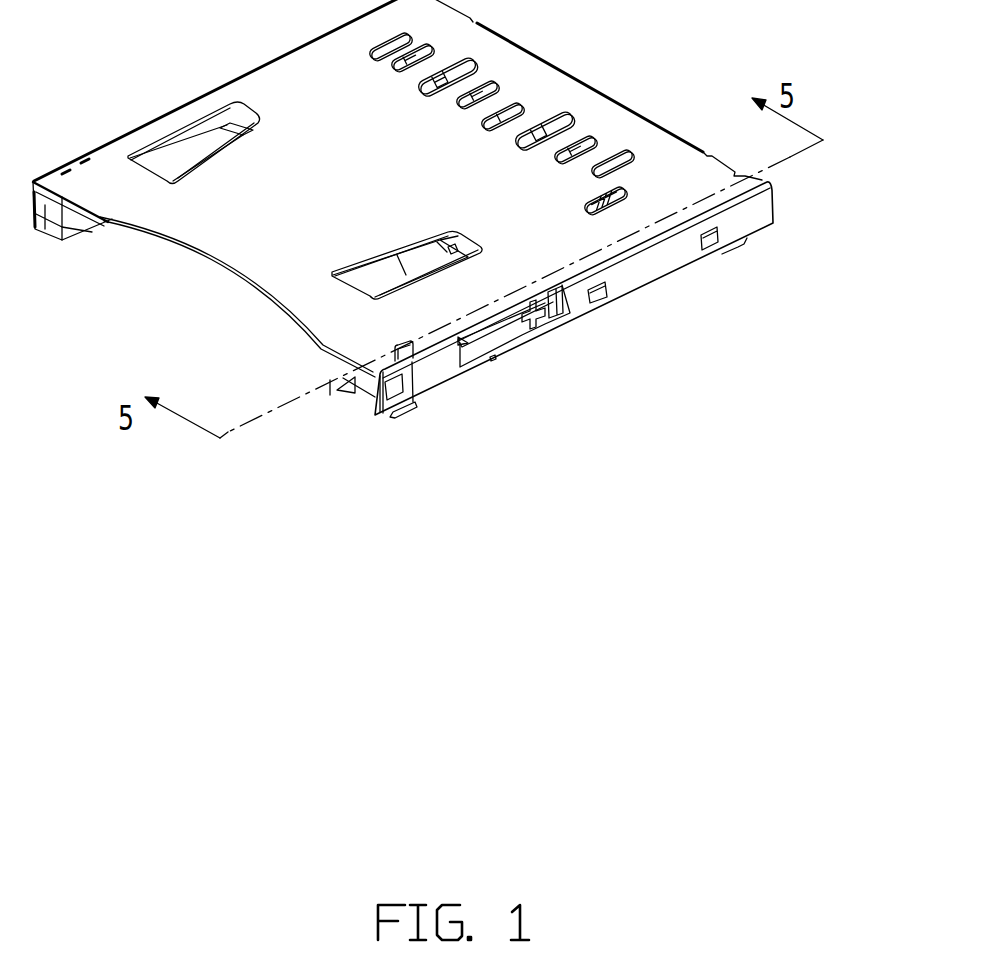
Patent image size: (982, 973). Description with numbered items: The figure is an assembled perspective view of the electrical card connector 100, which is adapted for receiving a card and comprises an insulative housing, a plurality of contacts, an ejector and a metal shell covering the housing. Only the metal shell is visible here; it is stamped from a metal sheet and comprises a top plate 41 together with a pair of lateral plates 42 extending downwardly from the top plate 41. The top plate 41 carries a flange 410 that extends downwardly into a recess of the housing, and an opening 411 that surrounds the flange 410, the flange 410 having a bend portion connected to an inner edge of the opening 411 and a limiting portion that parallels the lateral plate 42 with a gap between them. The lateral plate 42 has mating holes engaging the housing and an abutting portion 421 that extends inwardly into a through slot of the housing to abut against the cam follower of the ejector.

The electrical card connector 100 is at (423, 251).
The top plate 41 is at (602, 123).
The lateral plate 42 is at (594, 306).
The abutting portion 421 is at (500, 332).
The flange 410 is at (397, 420).
The opening 411 is at (415, 363).